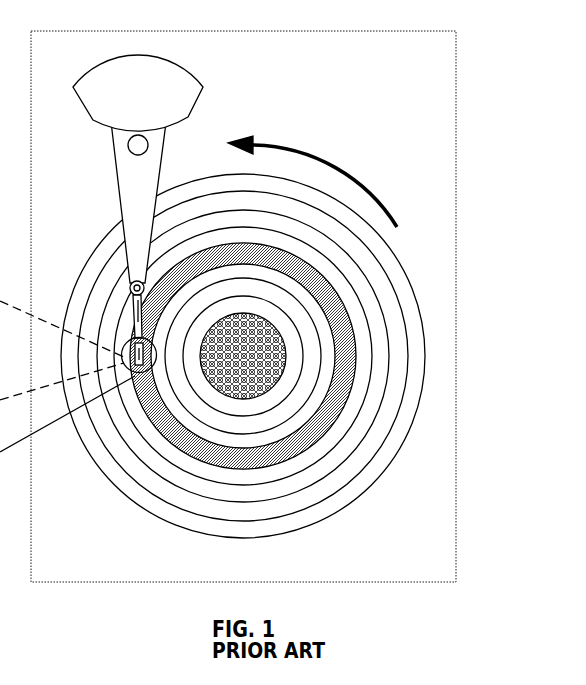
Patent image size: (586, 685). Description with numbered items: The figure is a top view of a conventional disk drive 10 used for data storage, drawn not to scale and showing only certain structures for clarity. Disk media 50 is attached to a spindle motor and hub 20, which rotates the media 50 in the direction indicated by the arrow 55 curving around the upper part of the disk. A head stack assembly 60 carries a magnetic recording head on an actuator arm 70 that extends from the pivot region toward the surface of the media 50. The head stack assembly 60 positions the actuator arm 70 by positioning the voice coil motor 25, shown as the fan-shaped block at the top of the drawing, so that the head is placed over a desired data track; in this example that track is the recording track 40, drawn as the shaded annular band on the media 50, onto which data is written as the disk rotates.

The disk drive 10 is at (453, 128).
The spindle motor and hub 20 is at (243, 356).
The voice coil motor 25 is at (198, 83).
The recording track 40 is at (354, 359).
The disk media 50 is at (343, 512).
The arrow 55 is at (313, 152).
The head stack assembly 60 is at (128, 145).
The actuator arm 70 is at (138, 182).